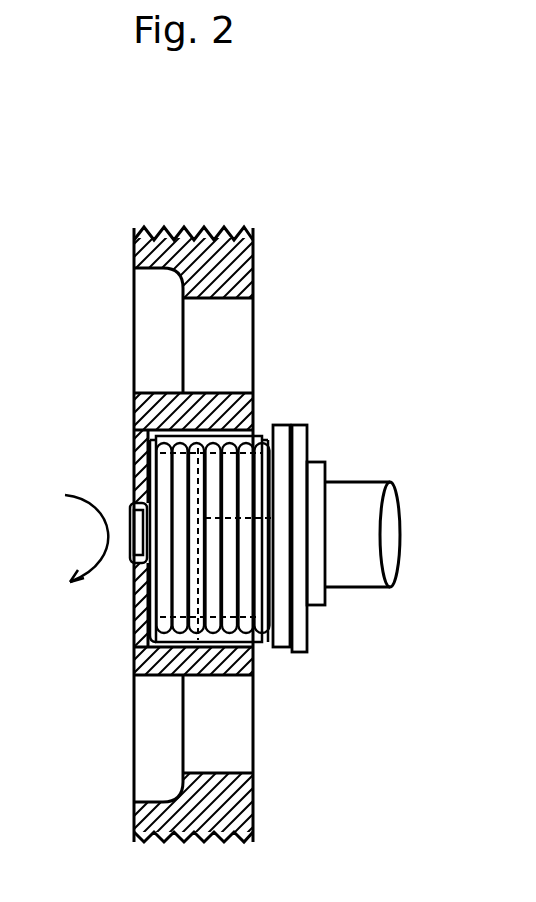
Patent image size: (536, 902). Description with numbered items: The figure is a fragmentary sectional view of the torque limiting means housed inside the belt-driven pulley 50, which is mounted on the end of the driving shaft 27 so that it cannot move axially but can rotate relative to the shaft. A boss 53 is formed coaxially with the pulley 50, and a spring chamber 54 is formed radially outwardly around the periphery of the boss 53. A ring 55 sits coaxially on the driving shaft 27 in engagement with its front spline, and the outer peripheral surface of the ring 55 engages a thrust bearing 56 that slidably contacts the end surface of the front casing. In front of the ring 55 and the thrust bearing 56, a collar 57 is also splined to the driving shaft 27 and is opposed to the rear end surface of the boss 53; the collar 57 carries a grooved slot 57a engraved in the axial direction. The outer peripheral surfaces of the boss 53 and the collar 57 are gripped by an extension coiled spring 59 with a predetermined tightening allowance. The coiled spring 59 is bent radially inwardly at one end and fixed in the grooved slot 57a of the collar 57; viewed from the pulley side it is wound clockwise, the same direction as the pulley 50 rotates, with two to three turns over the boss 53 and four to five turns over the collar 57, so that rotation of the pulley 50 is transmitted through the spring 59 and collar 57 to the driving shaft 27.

The pulley 50 is at (195, 240).
The boss 53 is at (150, 613).
The spring chamber 54 is at (155, 432).
The extension coiled spring 59 is at (160, 462).
The collar 57 is at (283, 428).
The thrust bearing 56 is at (302, 427).
The ring 55 is at (315, 465).
The grooved slot 57a is at (235, 540).
The driving shaft 27 is at (367, 539).